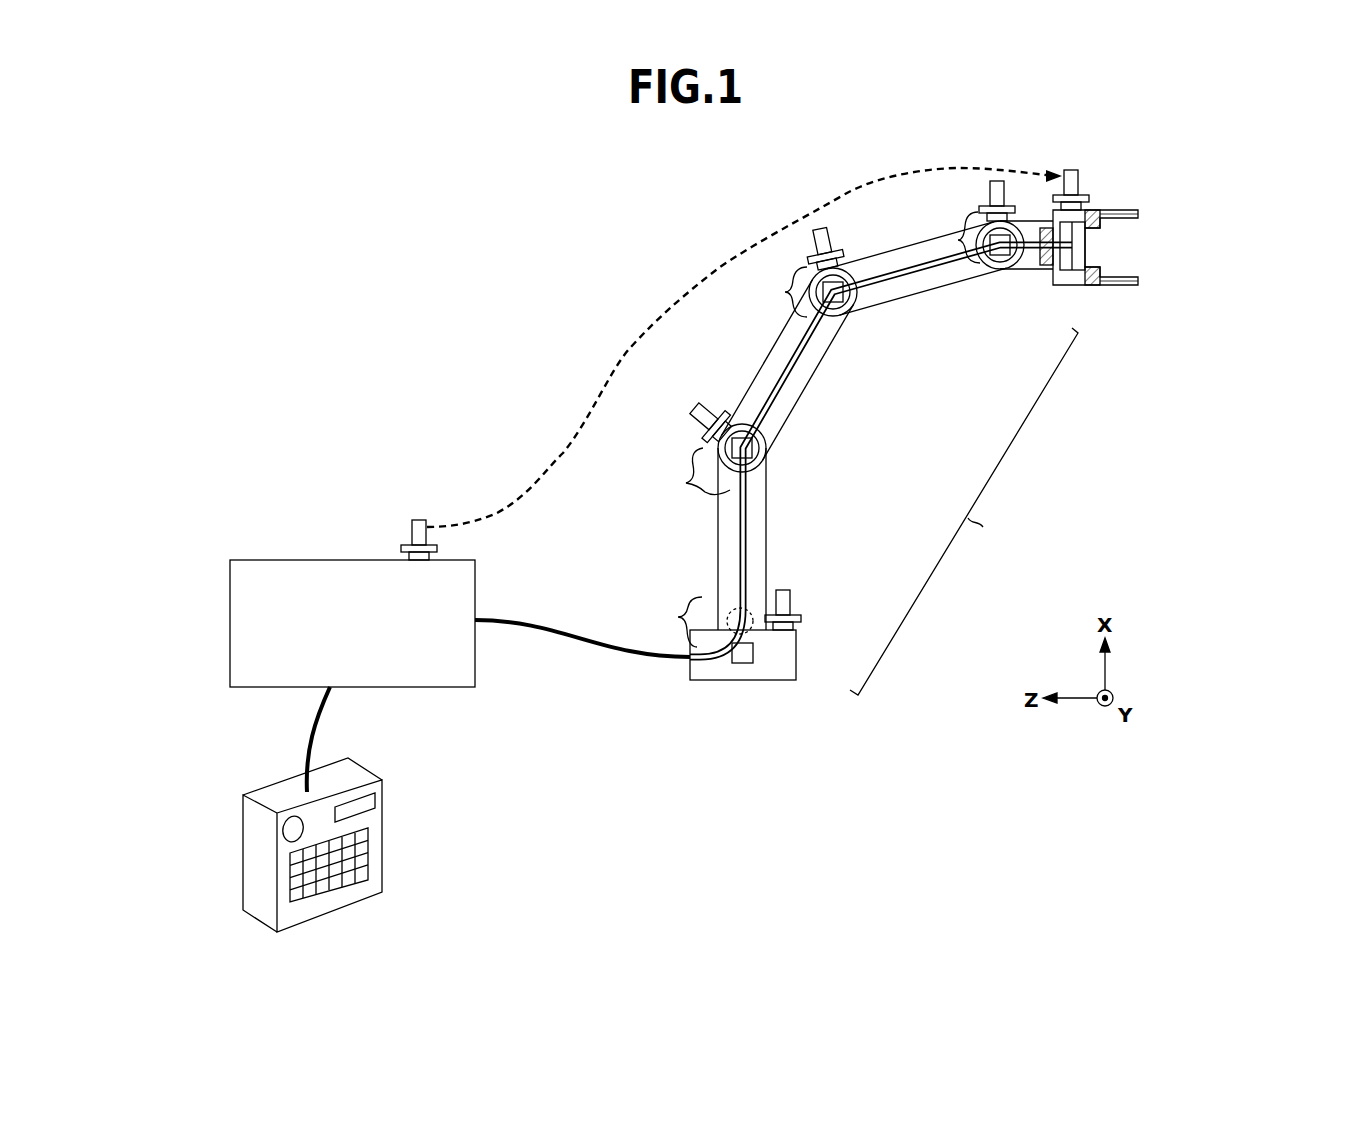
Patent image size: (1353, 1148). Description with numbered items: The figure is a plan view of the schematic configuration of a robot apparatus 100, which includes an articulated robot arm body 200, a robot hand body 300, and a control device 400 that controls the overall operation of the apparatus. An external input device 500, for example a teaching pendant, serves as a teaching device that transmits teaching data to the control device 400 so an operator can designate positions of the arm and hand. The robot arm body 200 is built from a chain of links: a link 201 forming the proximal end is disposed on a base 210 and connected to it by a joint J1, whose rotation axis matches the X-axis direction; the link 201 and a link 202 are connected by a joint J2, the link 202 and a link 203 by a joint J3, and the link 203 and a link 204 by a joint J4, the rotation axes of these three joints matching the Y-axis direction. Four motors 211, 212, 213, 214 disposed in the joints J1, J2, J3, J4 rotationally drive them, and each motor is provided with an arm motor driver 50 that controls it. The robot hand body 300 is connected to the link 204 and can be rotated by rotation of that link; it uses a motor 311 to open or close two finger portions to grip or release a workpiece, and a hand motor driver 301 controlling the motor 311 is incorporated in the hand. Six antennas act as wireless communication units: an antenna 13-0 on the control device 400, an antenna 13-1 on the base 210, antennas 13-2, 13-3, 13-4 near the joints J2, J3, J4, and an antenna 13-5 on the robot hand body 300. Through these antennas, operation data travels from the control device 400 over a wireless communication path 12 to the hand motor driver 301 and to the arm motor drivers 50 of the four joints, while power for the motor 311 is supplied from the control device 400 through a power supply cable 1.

The robot apparatus 100 is at (502, 157).
The power supply cable 1 is at (745, 566).
The wireless communication path 12 is at (662, 312).
The antenna 13-0 is at (413, 522).
The antenna 13-1 is at (791, 606).
The antenna 13-2 is at (706, 410).
The antenna 13-3 is at (822, 230).
The antenna 13-4 is at (995, 182).
The antenna 13-5 is at (1072, 170).
The arm motor driver 50 is at (763, 450).
The robot arm body 200 is at (964, 511).
The link 201 is at (767, 528).
The link 202 is at (803, 392).
The link 203 is at (910, 288).
The link 204 is at (1030, 264).
The base 210 is at (712, 681).
The motor 211 is at (755, 635).
The motor 212 is at (752, 468).
The motor 213 is at (830, 318).
The motor 214 is at (995, 266).
The robot hand body 300 is at (1142, 261).
The hand motor driver 301 is at (1083, 247).
The motor 311 is at (1078, 270).
The control device 400 is at (274, 560).
The external input device 500 is at (253, 852).
The joint J1 is at (675, 622).
The joint J2 is at (702, 473).
The joint J3 is at (781, 292).
The joint J4 is at (952, 236).